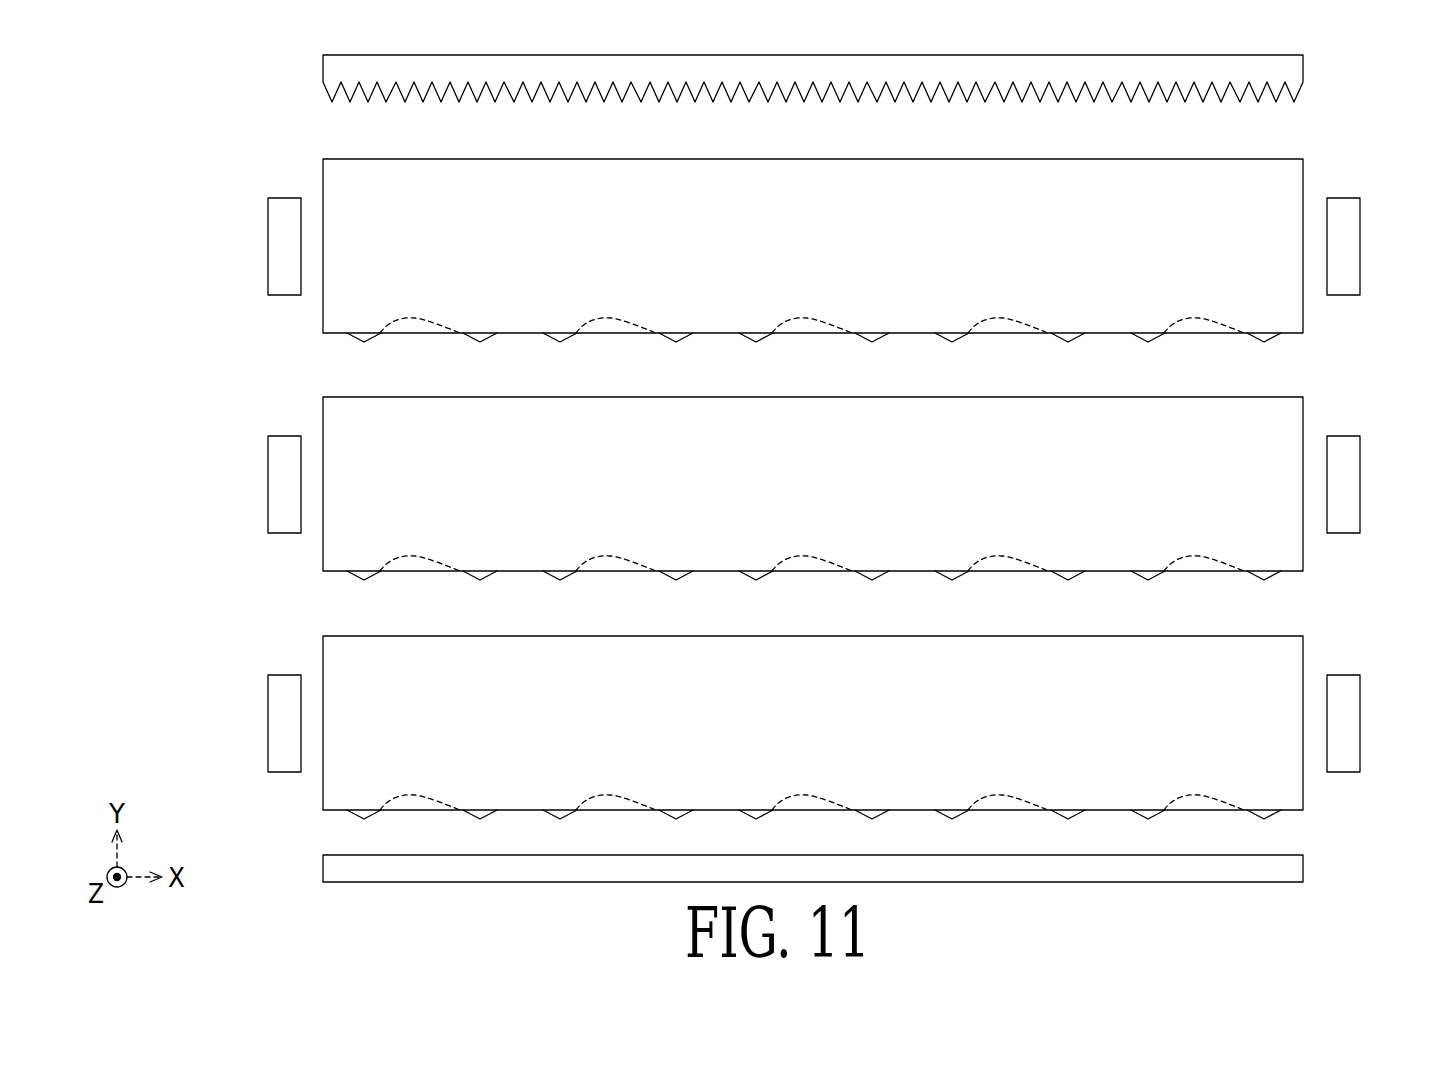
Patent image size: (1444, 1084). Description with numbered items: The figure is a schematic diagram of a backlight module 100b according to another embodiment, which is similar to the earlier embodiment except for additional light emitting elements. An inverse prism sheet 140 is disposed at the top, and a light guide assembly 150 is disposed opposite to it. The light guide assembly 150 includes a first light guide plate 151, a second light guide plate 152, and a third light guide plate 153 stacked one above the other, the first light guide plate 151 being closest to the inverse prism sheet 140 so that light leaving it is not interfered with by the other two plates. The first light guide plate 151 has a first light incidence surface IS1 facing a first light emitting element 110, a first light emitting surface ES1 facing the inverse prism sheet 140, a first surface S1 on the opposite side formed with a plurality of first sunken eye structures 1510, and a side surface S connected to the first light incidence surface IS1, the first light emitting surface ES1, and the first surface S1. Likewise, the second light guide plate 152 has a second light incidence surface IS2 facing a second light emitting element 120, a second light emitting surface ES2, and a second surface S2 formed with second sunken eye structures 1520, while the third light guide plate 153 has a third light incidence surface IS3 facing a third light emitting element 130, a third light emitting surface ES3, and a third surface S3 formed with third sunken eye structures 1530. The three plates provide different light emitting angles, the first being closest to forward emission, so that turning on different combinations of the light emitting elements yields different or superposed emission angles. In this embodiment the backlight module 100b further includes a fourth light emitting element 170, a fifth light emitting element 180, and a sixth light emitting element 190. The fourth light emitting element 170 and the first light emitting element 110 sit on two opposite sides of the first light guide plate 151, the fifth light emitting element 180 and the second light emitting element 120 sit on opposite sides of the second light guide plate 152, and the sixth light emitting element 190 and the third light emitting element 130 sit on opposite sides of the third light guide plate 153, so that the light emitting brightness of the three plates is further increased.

The backlight module 100b is at (190, 72).
The inverse prism sheet 140 is at (1303, 63).
The light guide assembly 150 is at (108, 345).
The first light guide plate 151 is at (809, 240).
The second light guide plate 152 is at (809, 479).
The third light guide plate 153 is at (809, 718).
The first sunken eye structure 1510 is at (428, 322).
The second sunken eye structure 1520 is at (446, 562).
The third sunken eye structure 1530 is at (458, 800).
The first light emitting element 110 is at (268, 249).
The second light emitting element 120 is at (268, 488).
The third light emitting element 130 is at (268, 726).
The fourth light emitting element 170 is at (1360, 248).
The fifth light emitting element 180 is at (1360, 486).
The sixth light emitting element 190 is at (1360, 725).
The first light incidence surface IS1 is at (320, 173).
The second light incidence surface IS2 is at (320, 411).
The third light incidence surface IS3 is at (320, 650).
The first light emitting surface ES1 is at (1270, 157).
The second light emitting surface ES2 is at (1270, 396).
The third light emitting surface ES3 is at (1270, 635).
The first surface S1 is at (336, 336).
The second surface S2 is at (336, 574).
The third surface S3 is at (336, 813).
The side surface S is at (879, 195).